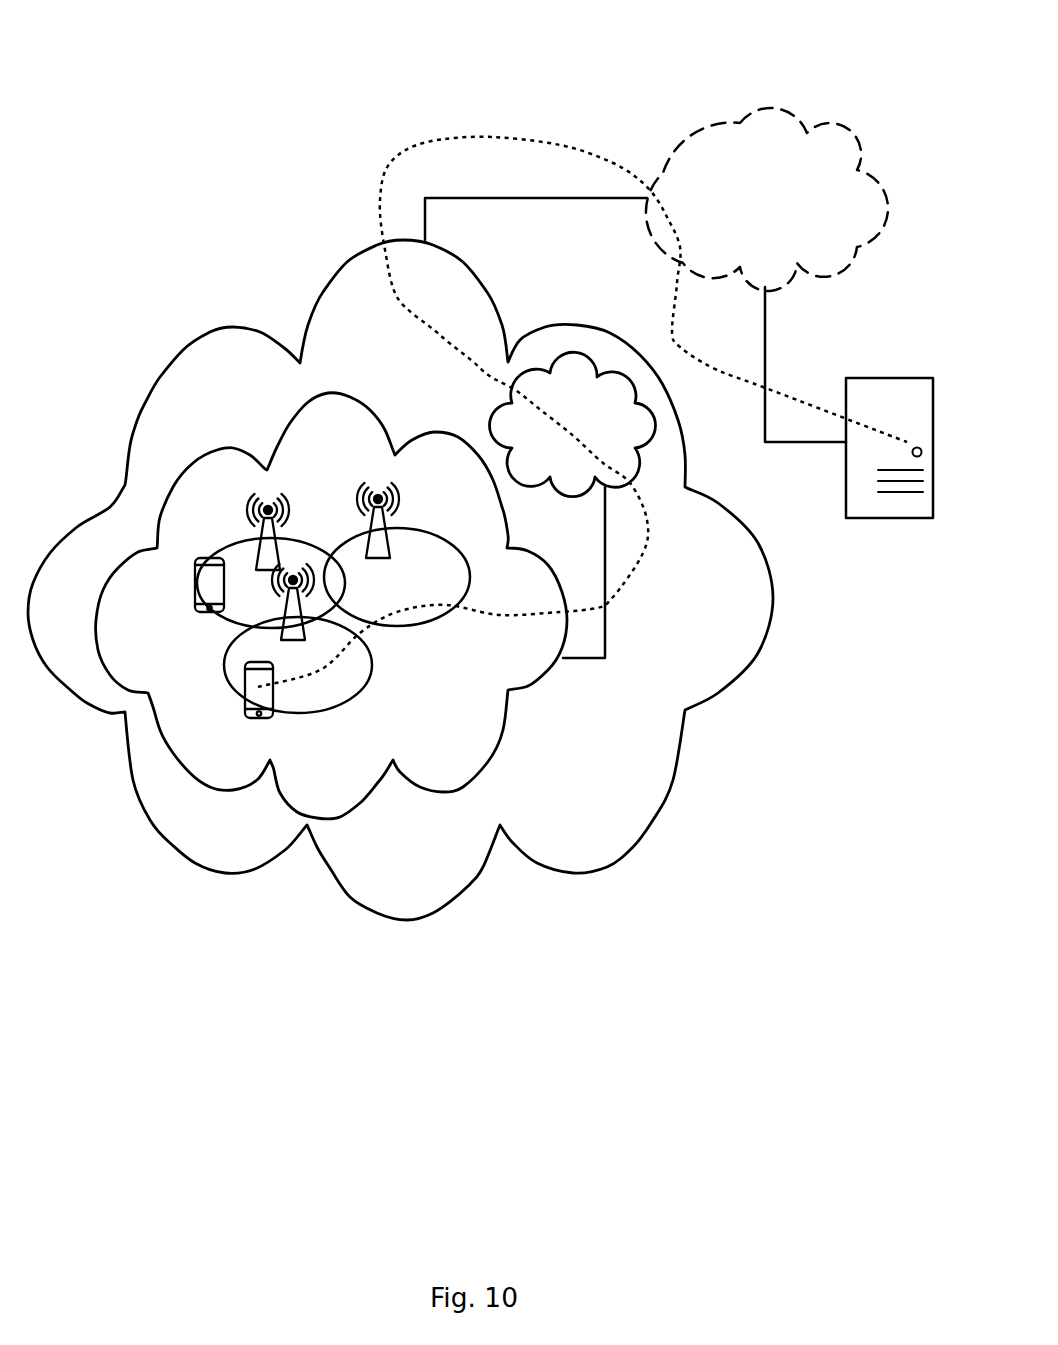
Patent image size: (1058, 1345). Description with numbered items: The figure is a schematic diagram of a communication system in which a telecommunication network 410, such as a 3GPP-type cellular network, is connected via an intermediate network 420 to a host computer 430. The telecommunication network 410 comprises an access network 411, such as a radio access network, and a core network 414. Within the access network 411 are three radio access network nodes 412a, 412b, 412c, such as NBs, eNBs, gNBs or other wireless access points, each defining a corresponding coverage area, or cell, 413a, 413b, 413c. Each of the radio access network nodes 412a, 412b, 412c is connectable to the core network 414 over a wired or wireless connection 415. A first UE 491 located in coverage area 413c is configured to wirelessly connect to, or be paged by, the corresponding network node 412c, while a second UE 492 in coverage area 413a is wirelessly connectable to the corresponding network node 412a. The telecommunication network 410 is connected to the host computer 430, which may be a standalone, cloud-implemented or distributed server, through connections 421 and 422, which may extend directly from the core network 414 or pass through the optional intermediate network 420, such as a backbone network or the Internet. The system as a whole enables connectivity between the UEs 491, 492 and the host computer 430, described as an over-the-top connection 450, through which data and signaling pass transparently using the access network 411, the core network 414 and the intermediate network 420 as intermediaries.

The telecommunication network 410 is at (391, 352).
The access network 411 is at (348, 457).
The radio access network node 412a is at (300, 640).
The radio access network node 412b is at (393, 512).
The radio access network node 412c is at (258, 556).
The coverage area 413a is at (380, 692).
The coverage area 413b is at (437, 620).
The coverage area 413c is at (237, 550).
The core network 414 is at (599, 409).
The wired or wireless connection 415 is at (607, 624).
The intermediate network 420 is at (790, 214).
The connection 421 is at (551, 198).
The connection 422 is at (800, 443).
The host computer 430 is at (907, 519).
The OTT connection 450 is at (405, 158).
The first UE 491 is at (192, 598).
The second UE 492 is at (250, 727).